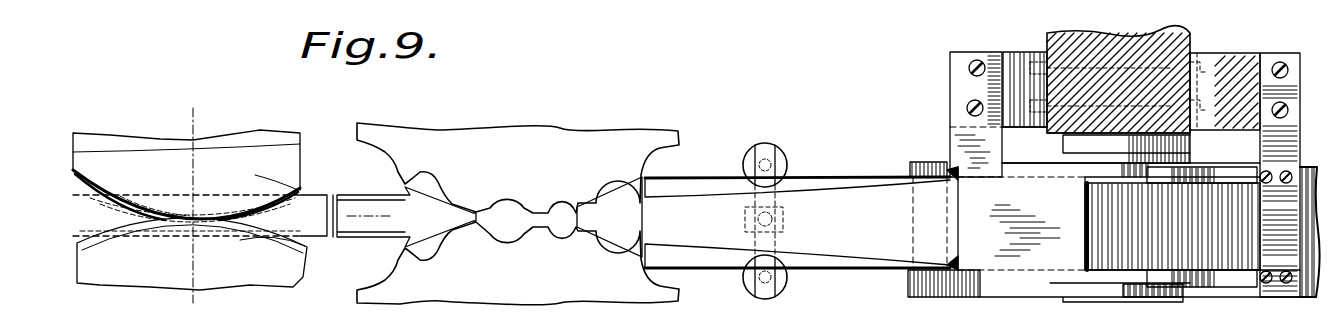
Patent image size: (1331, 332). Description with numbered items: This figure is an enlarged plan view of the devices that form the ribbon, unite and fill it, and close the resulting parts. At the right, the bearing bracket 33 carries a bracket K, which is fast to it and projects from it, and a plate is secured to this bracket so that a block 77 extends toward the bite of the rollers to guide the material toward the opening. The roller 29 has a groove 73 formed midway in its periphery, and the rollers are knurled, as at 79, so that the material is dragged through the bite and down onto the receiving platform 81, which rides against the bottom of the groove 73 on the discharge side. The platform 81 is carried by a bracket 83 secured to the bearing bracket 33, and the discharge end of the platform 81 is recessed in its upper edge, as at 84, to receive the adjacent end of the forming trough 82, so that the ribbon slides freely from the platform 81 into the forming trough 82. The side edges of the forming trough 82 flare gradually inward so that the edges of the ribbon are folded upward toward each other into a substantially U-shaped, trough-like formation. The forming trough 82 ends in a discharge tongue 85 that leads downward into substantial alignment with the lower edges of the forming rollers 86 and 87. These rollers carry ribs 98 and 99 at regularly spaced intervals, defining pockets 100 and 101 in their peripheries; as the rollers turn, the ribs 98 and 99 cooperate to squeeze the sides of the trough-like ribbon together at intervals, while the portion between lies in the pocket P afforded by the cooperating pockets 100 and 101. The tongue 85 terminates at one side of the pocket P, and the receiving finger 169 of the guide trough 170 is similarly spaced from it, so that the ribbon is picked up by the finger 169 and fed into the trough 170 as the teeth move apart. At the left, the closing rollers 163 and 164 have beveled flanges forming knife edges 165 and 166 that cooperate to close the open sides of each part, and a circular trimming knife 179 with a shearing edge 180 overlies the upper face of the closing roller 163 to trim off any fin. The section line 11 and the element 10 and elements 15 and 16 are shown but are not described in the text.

The circular trimming knife 179 is at (150, 160).
The section line 11 is at (178, 115).
The closing roller 163 is at (260, 132).
The knife edge 165 is at (297, 187).
The shearing edge 180 is at (160, 183).
The stock strip 10 is at (310, 197).
The knife edge 166 is at (300, 247).
The closing roller 164 is at (260, 280).
The guide trough 170 is at (353, 197).
The ribs 99 is at (353, 290).
The receiving finger 169 is at (447, 210).
The pocket P is at (517, 207).
The pockets 100 is at (573, 192).
The pockets 101 is at (523, 237).
The discharge tongue 85 is at (625, 235).
The forming roller 86 is at (582, 135).
The forming roller 87 is at (548, 298).
The ribs 98 is at (640, 172).
The forming trough 82 is at (853, 272).
The recess 84 is at (947, 247).
The bracket 83 is at (1015, 52).
The roller 29 is at (1040, 163).
The bearing bracket 33 is at (1190, 48).
The end plate 15 is at (1283, 48).
The bracket K is at (1236, 130).
The guide strip 16 is at (1243, 177).
The knurls 79 is at (1097, 191).
The receiving platform 81 is at (1007, 272).
The groove 73 is at (1095, 272).
The block 77 is at (1245, 280).